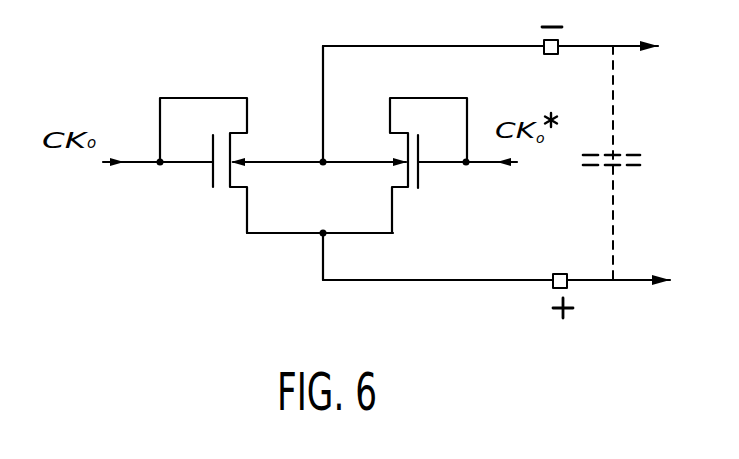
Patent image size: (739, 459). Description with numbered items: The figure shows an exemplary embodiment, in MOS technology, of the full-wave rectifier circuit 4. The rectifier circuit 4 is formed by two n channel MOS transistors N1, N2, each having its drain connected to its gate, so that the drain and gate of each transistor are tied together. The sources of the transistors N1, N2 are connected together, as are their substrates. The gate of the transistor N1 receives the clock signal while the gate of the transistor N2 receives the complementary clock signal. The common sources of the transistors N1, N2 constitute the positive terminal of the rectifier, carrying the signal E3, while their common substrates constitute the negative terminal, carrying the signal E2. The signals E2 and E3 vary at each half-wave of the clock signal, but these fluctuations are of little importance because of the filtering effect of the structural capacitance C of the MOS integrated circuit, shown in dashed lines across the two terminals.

The rectifier circuit 4 is at (329, 150).
The n channel MOS transistor N1 is at (215, 209).
The n channel MOS transistor N2 is at (428, 198).
The signal E2 is at (396, 44).
The signal E3 is at (458, 281).
The structural capacitance C is at (634, 155).